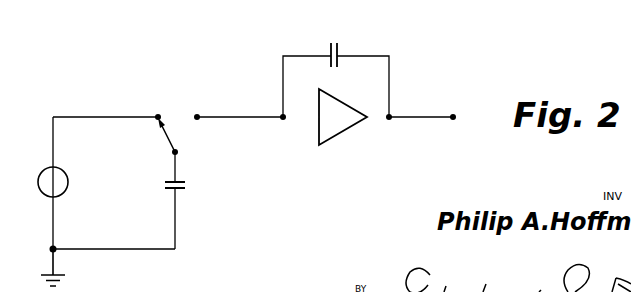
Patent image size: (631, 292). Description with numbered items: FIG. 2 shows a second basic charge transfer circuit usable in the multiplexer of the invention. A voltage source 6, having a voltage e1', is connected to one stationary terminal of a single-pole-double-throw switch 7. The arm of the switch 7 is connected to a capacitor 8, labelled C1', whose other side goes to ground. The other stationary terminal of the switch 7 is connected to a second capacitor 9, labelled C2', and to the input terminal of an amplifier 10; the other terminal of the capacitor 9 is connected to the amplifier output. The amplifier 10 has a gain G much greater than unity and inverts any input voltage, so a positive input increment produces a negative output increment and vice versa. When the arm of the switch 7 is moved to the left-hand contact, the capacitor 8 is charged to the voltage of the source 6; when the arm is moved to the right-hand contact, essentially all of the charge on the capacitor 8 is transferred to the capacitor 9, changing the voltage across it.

The voltage source 6 is at (68, 172).
The single-pole-double-throw switch 7 is at (168, 138).
The capacitor 8 is at (172, 189).
The second capacitor 9 is at (339, 60).
The amplifier 10 is at (345, 128).